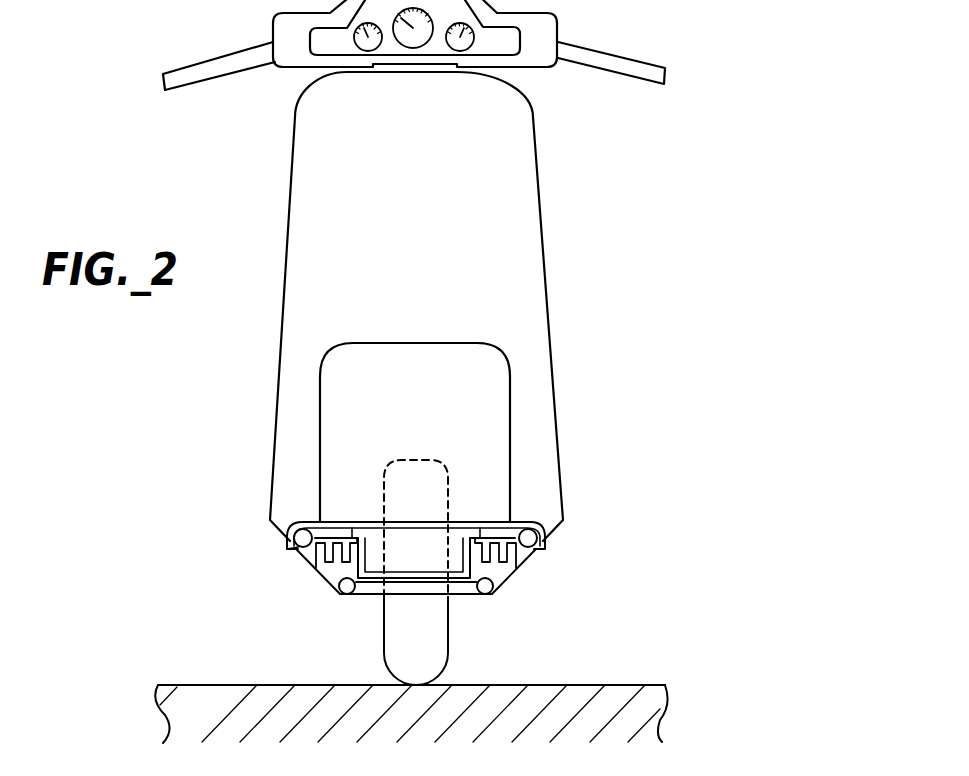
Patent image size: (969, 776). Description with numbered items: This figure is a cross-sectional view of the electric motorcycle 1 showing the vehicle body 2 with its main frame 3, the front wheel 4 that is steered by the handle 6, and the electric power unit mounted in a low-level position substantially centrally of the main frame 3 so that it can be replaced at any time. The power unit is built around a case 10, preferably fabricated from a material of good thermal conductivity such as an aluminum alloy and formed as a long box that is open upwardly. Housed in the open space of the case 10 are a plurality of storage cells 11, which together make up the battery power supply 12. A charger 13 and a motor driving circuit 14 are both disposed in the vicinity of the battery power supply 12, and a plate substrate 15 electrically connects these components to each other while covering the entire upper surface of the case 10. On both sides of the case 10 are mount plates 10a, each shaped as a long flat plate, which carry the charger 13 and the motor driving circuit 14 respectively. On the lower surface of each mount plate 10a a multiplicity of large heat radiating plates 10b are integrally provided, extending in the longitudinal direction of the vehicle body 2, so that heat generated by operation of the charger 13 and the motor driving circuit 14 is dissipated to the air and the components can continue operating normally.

The motorcycle (scooter) instrument panel 1 is at (228, 37).
The vehicle body 2 is at (537, 177).
The main frame 3 is at (272, 522).
The front wheel 4 is at (407, 482).
The handle 6 is at (600, 43).
The case 10 is at (414, 543).
The mount plates 10a is at (327, 528).
The heat radiating plates 10b is at (337, 577).
The storage cells 11 is at (466, 605).
The battery power supply 12 is at (463, 605).
The charger 13 is at (337, 533).
The motor driving circuit 14 is at (512, 524).
The plate substrate 15 is at (500, 528).